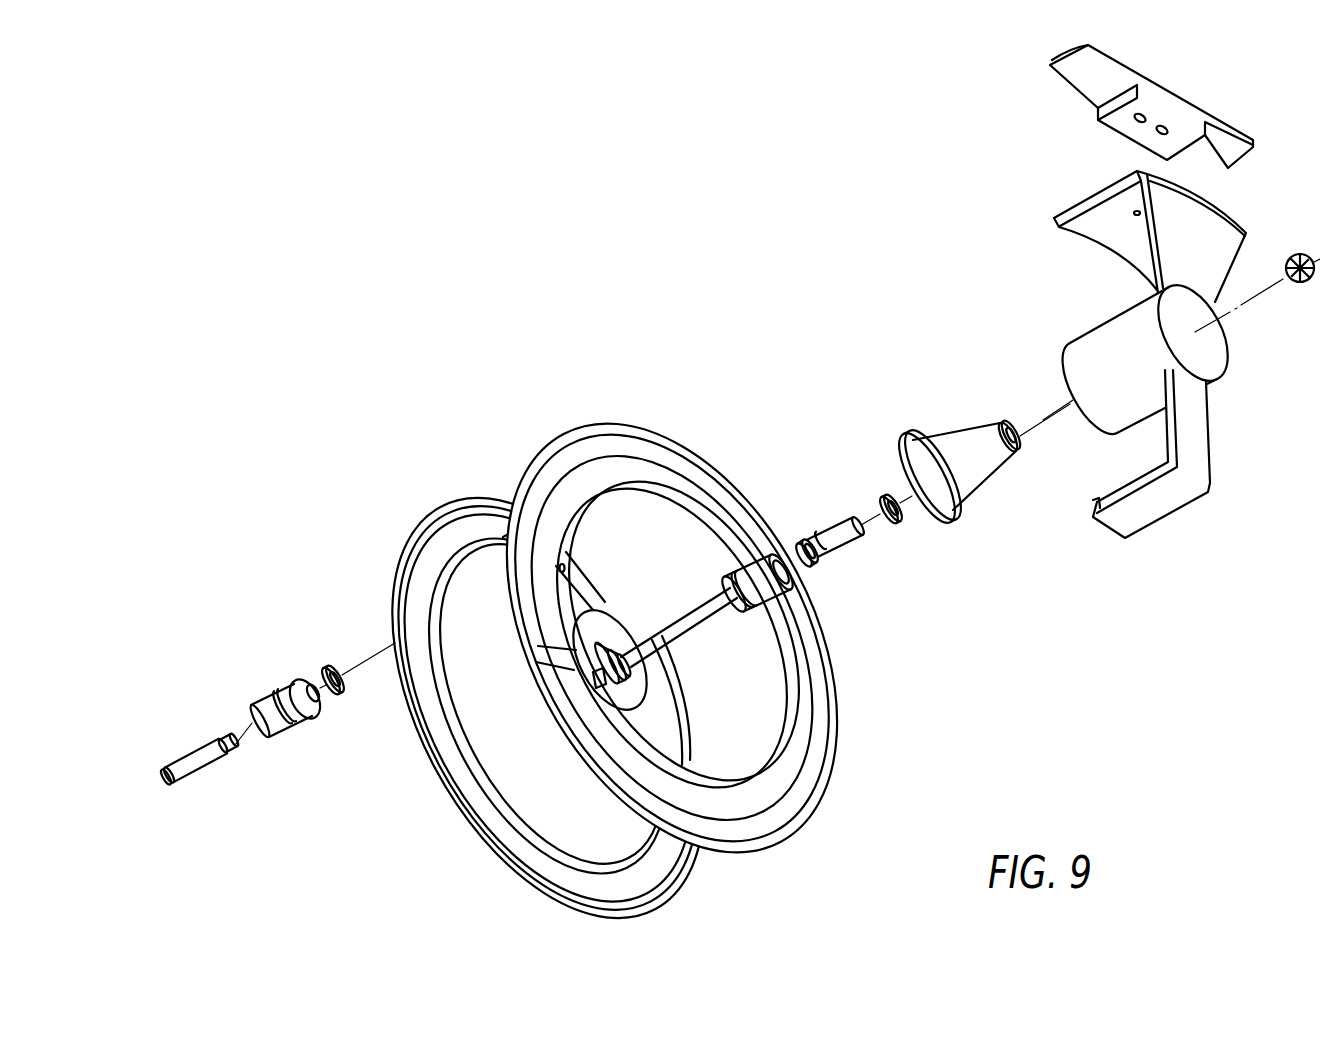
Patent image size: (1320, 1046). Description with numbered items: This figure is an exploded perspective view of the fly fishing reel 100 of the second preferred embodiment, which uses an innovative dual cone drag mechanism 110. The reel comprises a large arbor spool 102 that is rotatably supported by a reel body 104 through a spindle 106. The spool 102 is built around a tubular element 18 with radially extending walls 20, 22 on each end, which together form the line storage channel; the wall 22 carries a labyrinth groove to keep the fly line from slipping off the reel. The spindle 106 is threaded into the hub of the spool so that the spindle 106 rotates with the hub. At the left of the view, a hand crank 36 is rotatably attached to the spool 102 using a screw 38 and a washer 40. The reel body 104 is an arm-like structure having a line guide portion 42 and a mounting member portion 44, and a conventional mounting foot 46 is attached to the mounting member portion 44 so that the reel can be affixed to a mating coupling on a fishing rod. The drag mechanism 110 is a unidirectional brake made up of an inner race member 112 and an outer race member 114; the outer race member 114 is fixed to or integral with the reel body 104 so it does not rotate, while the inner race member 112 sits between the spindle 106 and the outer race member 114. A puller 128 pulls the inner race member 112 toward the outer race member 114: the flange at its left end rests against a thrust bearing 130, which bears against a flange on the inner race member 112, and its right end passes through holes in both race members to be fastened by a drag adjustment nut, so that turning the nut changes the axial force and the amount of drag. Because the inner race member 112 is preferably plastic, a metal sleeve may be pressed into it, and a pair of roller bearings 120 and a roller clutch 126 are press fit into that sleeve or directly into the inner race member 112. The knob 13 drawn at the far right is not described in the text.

The fly fishing reel 100 is at (634, 336).
The large arbor spool 102 is at (668, 424).
The wall 20 is at (697, 455).
The tubular element 18 is at (670, 838).
The wall 22 is at (407, 553).
The spindle 106 is at (708, 630).
The roller bearings 120 is at (765, 625).
The roller clutch 126 is at (773, 560).
The puller 128 is at (821, 543).
The thrust bearing 130 is at (899, 522).
The dual cone drag mechanism 110 is at (918, 405).
The inner race member 112 is at (995, 483).
The outer race member 114 is at (1123, 452).
The reel body 104 is at (1210, 412).
The line guide portion 42 is at (1167, 517).
The mounting member portion 44 is at (1058, 212).
The mounting foot 46 is at (1233, 122).
The knob 13 is at (1297, 252).
The hand crank 36 is at (268, 698).
The screw 38 is at (192, 749).
The washer 40 is at (330, 672).